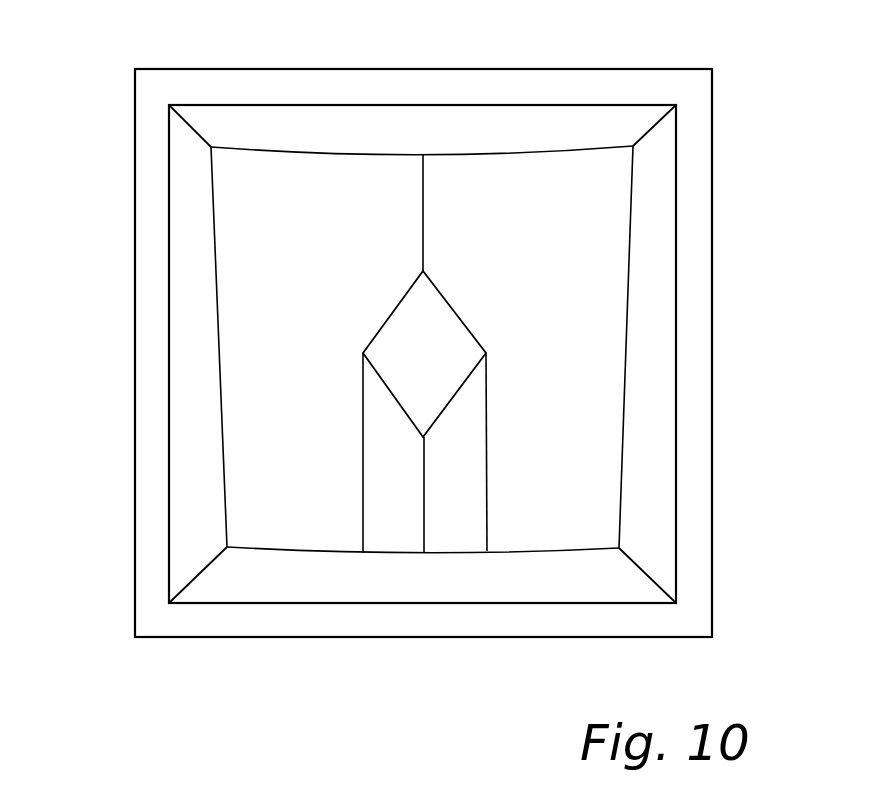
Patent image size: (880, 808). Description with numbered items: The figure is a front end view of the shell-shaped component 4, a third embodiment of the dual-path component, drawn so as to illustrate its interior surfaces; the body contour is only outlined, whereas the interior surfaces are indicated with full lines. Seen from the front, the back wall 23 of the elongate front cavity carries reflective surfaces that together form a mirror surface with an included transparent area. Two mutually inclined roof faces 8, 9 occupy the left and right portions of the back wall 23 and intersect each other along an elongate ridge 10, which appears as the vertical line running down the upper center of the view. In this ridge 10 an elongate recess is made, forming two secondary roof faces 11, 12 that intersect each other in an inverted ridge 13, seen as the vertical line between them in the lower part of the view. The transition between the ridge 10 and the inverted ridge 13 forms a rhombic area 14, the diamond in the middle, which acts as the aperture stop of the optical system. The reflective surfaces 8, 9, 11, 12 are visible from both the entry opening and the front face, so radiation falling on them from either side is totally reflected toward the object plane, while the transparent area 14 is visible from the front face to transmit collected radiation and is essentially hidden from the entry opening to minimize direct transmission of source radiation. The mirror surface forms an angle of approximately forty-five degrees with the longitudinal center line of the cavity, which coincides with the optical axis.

The shell-shaped component 4 is at (100, 258).
The roof face 8 is at (283, 252).
The roof face 9 is at (535, 252).
The elongate ridge 10 is at (425, 188).
The secondary roof face 11 is at (436, 499).
The secondary roof face 12 is at (377, 499).
The inverted ridge 13 is at (425, 520).
The rhombic area 14 is at (413, 370).
The back wall 23 is at (573, 350).